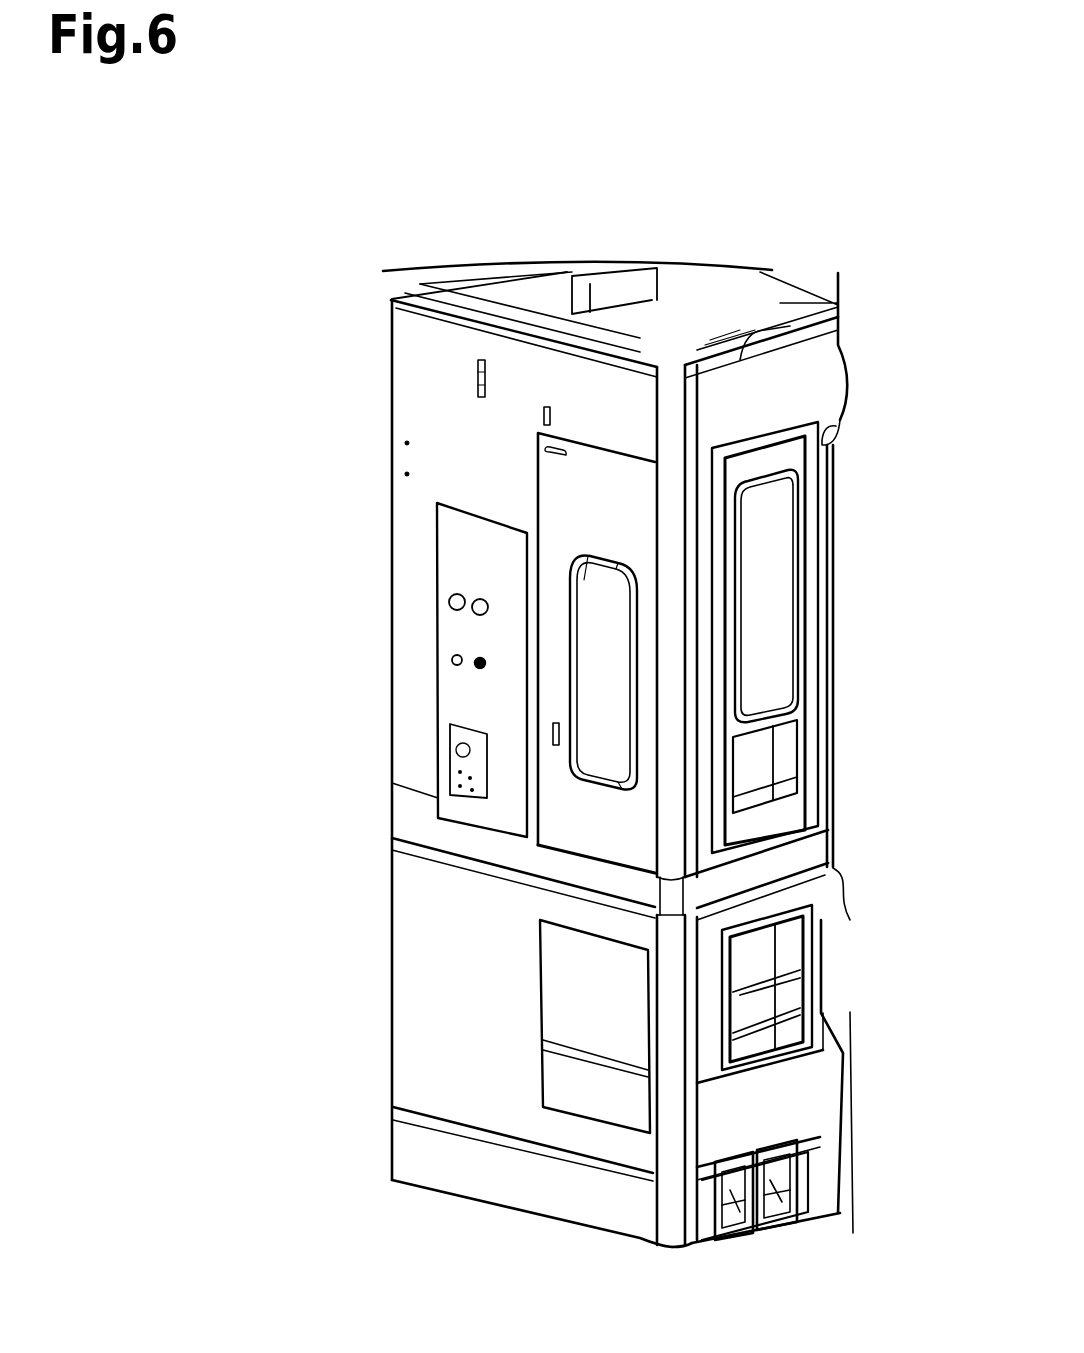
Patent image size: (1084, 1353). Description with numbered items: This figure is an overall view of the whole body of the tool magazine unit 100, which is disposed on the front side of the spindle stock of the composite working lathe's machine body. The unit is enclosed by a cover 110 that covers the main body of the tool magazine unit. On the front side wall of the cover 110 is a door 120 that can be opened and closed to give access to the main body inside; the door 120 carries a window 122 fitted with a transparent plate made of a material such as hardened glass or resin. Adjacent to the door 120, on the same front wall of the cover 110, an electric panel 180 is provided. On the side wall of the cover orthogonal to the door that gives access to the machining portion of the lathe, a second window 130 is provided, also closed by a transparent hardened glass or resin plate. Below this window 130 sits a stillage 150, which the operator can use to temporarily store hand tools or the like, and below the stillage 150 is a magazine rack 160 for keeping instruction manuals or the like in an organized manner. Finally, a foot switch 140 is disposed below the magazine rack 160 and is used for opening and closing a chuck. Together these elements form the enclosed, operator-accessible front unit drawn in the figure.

The tool magazine unit 100 is at (486, 240).
The cover 110 is at (417, 938).
The door 120 is at (570, 495).
The window 122 is at (610, 668).
The window 130 is at (770, 642).
The foot switch 140 is at (737, 1233).
The stillage 150 is at (775, 788).
The magazine rack 160 is at (747, 963).
The electric panel 180 is at (463, 700).